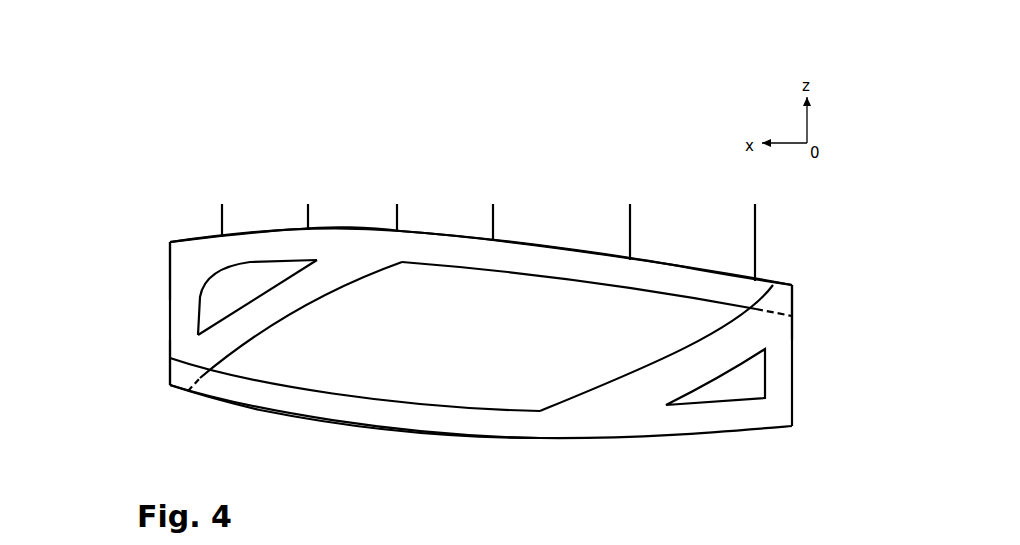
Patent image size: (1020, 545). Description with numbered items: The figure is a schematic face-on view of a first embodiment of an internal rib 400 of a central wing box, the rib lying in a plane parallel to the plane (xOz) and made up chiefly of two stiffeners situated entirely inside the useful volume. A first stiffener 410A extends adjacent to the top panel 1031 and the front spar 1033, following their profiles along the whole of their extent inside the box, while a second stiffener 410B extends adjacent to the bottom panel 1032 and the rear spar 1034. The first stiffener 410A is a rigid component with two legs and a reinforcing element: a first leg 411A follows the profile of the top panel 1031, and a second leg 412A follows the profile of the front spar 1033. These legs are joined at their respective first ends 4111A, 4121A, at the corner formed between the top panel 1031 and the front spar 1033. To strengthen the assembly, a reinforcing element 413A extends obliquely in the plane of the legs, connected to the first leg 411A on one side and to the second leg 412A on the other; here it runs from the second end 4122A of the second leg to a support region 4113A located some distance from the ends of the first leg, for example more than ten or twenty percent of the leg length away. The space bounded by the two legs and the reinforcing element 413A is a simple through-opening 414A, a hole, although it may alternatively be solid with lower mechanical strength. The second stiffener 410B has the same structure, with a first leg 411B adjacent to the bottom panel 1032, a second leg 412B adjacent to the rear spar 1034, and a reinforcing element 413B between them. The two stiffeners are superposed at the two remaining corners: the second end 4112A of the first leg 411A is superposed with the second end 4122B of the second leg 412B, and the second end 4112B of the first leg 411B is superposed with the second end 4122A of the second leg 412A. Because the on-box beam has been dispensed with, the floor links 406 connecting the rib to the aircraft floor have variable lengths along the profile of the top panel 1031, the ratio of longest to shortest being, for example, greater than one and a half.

The internal rib 400 is at (478, 311).
The first stiffener 410A is at (450, 222).
The second stiffener 410B is at (549, 454).
The first leg 411A is at (653, 278).
The first leg 411B is at (307, 408).
The second leg 412A is at (208, 256).
The second leg 412B is at (768, 388).
The reinforcing element 413A is at (285, 300).
The reinforcing element 413B is at (692, 380).
The through-opening 414A is at (250, 282).
The first end of the first leg 4111A is at (195, 248).
The support region 4113A is at (353, 260).
The second end of the first leg 4112A is at (777, 297).
The first end of the second leg 4121A is at (185, 260).
The second end of the second leg 4122A is at (180, 372).
The second end of the first leg 4112B is at (172, 387).
The second end of the second leg 4122B is at (778, 310).
The top panel 1031 is at (527, 237).
The bottom panel 1032 is at (408, 434).
The front spar 1033 is at (169, 290).
The rear spar 1034 is at (792, 352).
The floor links 406 is at (628, 222).